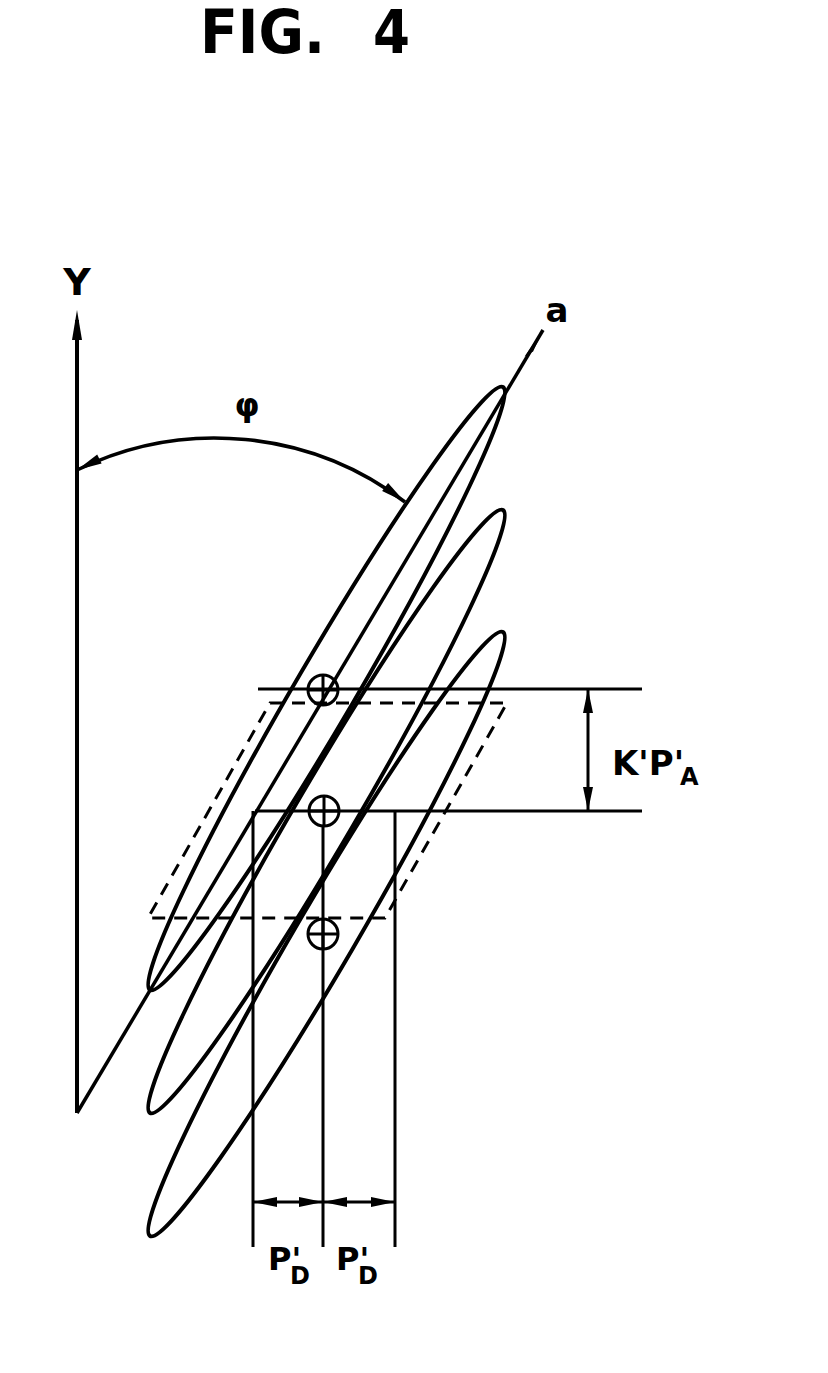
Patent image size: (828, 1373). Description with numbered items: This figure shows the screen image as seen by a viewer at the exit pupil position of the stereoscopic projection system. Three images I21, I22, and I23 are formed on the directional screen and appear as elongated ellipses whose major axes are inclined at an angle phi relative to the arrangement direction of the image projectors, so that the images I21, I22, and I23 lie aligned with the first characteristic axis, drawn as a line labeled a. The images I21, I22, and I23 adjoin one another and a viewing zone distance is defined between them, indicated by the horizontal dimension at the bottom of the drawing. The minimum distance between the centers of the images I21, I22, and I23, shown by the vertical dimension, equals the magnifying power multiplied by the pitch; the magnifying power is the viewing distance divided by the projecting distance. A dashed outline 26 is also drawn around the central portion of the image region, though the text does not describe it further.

The recording layer region 26 is at (210, 812).
The image I23 is at (507, 413).
The image I22 is at (510, 531).
The image I21 is at (510, 652).